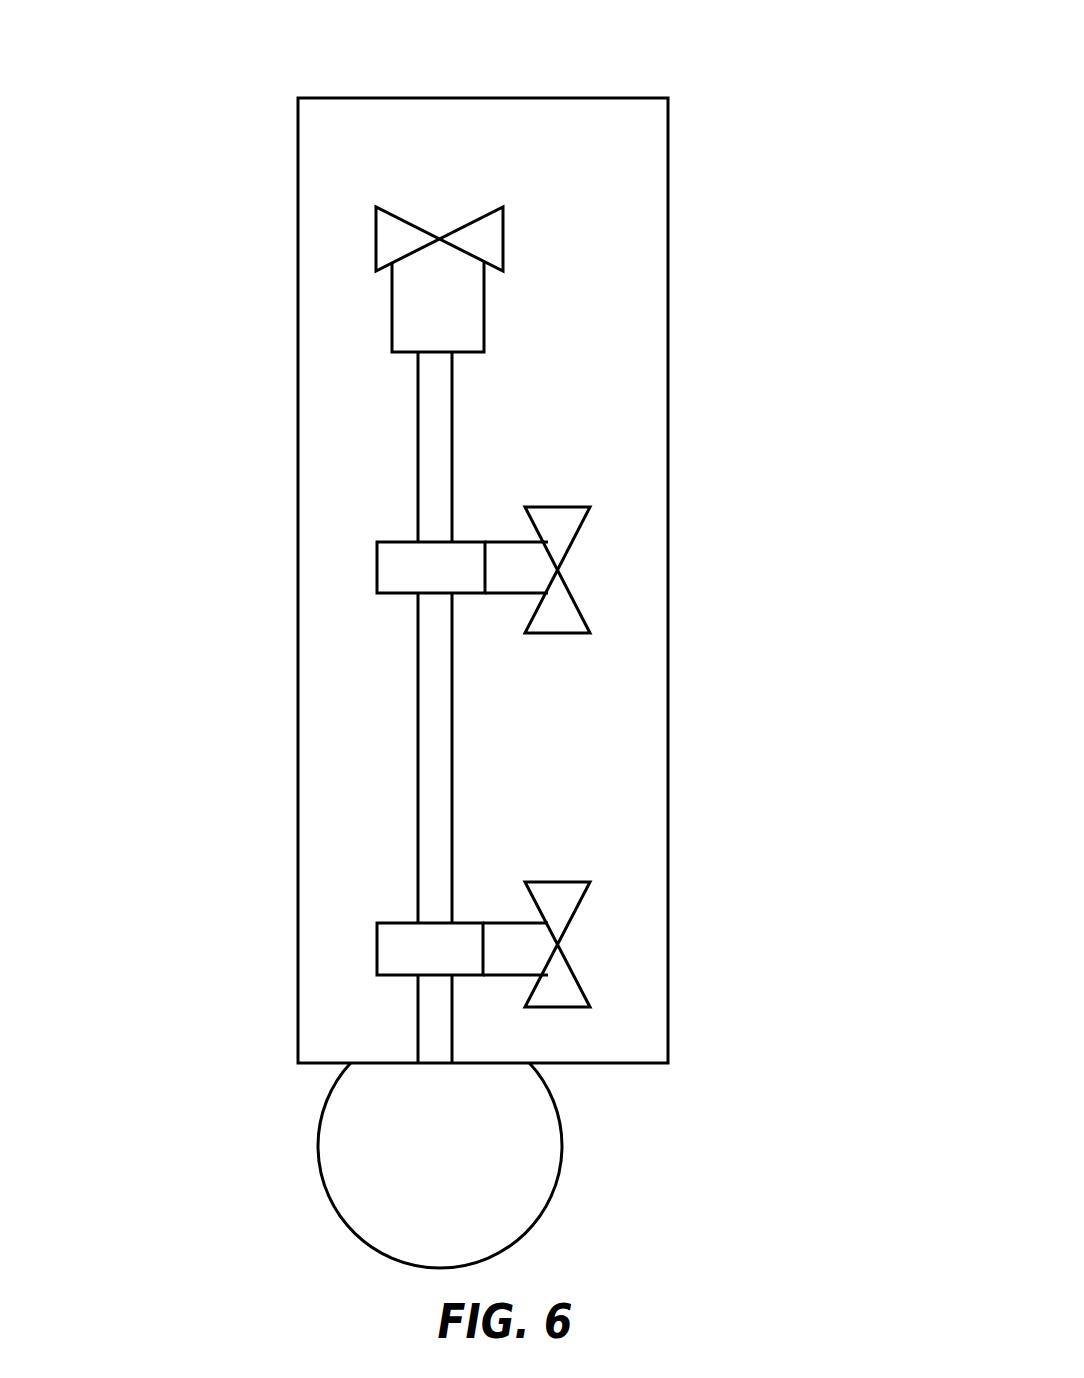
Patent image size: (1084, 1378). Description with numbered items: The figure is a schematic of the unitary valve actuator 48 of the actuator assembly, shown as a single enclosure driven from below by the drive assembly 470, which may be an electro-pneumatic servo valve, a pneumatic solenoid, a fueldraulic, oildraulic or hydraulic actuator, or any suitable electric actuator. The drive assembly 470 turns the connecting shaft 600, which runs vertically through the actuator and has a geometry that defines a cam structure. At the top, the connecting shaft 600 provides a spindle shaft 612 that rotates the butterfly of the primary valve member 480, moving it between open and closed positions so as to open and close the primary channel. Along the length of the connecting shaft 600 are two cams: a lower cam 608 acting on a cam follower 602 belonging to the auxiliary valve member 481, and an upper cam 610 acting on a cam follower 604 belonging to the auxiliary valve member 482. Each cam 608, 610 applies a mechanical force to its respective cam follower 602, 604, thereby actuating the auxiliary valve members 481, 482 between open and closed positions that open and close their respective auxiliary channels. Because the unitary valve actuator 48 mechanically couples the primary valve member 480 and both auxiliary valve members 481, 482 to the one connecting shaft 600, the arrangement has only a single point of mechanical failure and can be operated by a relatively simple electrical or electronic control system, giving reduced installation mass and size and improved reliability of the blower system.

The unitary valve actuator 48 is at (618, 713).
The drive assembly 470 is at (412, 1118).
The primary valve member 480 is at (439, 239).
The auxiliary valve member 481 is at (560, 938).
The auxiliary valve member 482 is at (575, 595).
The connecting shaft 600 is at (435, 446).
The cam follower 602 is at (503, 975).
The cam follower 604 is at (522, 550).
The cam 608 is at (377, 958).
The cam 610 is at (377, 584).
The spindle shaft 612 is at (390, 312).